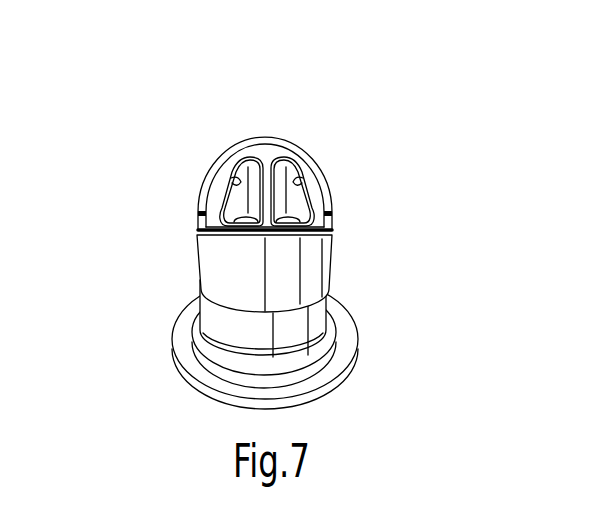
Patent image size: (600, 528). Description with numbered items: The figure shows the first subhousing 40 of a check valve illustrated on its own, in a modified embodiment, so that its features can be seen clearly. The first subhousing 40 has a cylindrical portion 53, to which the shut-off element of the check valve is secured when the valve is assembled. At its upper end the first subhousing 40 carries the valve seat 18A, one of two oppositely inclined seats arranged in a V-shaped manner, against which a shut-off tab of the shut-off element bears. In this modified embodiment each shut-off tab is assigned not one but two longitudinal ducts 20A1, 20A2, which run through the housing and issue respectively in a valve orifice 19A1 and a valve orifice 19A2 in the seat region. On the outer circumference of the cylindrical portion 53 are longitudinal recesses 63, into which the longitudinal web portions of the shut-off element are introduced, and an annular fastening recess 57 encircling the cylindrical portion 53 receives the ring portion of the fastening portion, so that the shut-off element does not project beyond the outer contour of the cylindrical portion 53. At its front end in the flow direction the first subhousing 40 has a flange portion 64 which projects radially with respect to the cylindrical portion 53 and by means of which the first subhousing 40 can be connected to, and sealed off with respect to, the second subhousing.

The first subhousing 40 is at (313, 117).
The valve seat 18A is at (227, 165).
The valve orifice 19A1 is at (247, 157).
The valve orifice 19A2 is at (298, 207).
The longitudinal duct 20A1 is at (237, 207).
The longitudinal duct 20A2 is at (305, 205).
The longitudinal recess 63 is at (193, 217).
The cylindrical portion 53 is at (223, 262).
The annular fastening recess 57 is at (313, 308).
The flange portion 64 is at (353, 363).